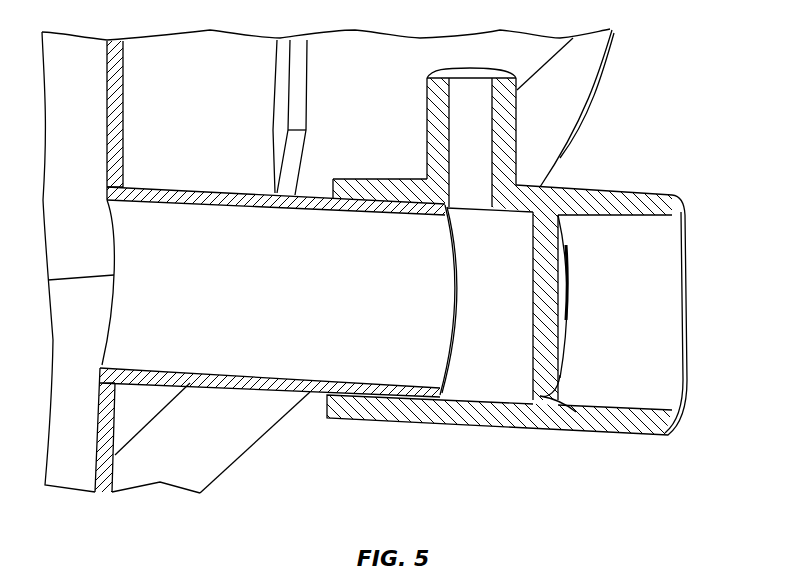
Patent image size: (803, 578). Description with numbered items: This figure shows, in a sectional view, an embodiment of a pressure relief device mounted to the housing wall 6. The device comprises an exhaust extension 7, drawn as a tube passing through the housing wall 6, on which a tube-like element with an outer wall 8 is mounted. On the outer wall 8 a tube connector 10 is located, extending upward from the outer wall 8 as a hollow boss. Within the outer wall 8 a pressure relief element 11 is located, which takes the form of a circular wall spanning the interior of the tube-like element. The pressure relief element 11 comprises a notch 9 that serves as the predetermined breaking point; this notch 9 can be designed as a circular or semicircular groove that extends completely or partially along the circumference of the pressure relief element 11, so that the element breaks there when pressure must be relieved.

The housing wall 6 is at (228, 432).
The exhaust extension 7 is at (233, 195).
The outer wall 8 is at (362, 180).
The notch 9 is at (576, 412).
The tube connector 10 is at (425, 115).
The pressure relief element 11 is at (533, 312).